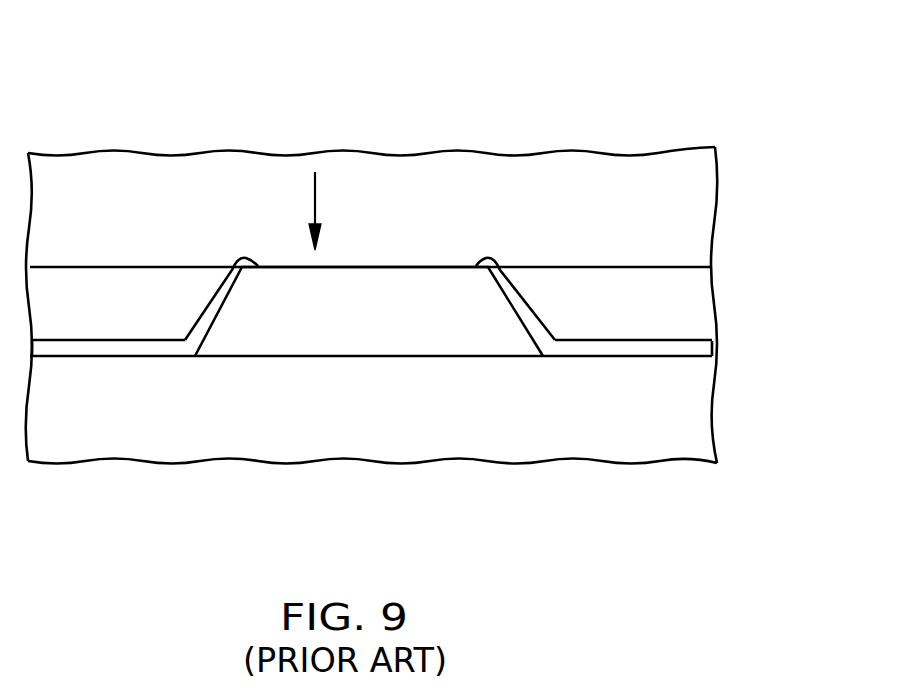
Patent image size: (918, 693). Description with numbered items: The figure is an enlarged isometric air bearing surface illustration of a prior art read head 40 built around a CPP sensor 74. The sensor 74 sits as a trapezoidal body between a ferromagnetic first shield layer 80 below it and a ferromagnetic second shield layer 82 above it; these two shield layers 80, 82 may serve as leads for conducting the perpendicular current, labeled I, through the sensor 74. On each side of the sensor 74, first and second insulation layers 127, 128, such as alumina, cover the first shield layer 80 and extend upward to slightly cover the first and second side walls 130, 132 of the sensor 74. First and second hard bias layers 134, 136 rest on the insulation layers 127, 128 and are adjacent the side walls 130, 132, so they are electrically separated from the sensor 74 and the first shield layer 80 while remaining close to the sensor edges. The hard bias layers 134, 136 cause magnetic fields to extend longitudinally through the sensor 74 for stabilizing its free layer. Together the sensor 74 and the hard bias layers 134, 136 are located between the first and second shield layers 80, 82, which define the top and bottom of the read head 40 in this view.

The read head 40 is at (197, 140).
The CPP sensor 74 is at (440, 265).
The first shield layer 80 is at (160, 435).
The second shield layer 82 is at (686, 204).
The first insulation layer 127 is at (93, 350).
The second insulation layer 128 is at (613, 347).
The first side wall 130 is at (222, 303).
The second side wall 132 is at (520, 297).
The first hard bias layer 134 is at (103, 276).
The second hard bias layer 136 is at (633, 276).